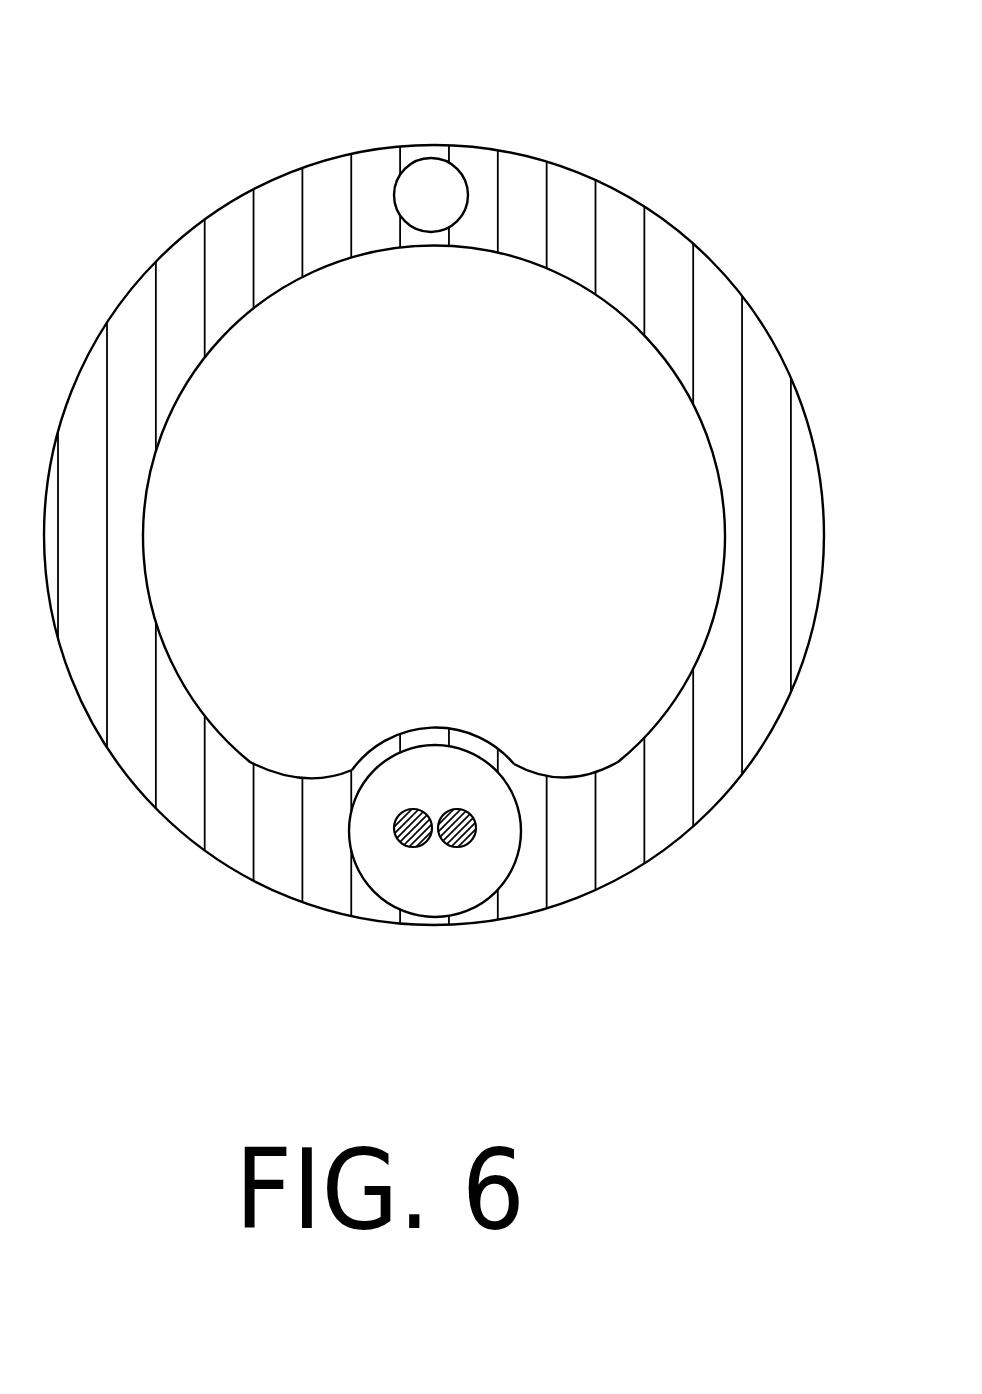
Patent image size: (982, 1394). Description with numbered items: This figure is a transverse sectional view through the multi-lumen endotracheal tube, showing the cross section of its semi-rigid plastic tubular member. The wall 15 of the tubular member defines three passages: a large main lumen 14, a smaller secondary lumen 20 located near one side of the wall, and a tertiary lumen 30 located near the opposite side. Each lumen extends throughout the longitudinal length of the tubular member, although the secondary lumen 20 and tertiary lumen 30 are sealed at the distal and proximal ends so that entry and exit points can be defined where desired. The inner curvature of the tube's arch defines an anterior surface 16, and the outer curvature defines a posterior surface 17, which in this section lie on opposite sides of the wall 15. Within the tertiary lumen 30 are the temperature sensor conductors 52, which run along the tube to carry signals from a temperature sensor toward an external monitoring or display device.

The anterior surface 16 is at (475, 150).
The wall 15 is at (767, 562).
The main lumen 14 is at (452, 556).
The posterior surface 17 is at (399, 924).
The secondary lumen 20 is at (432, 192).
The tertiary lumen 30 is at (438, 884).
The temperature sensor conductors 52 is at (395, 828).